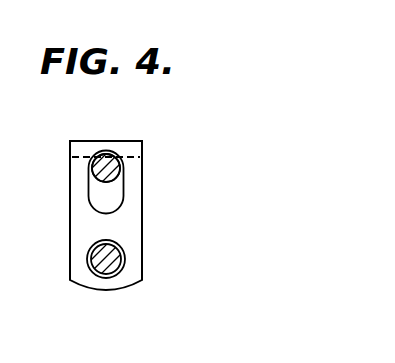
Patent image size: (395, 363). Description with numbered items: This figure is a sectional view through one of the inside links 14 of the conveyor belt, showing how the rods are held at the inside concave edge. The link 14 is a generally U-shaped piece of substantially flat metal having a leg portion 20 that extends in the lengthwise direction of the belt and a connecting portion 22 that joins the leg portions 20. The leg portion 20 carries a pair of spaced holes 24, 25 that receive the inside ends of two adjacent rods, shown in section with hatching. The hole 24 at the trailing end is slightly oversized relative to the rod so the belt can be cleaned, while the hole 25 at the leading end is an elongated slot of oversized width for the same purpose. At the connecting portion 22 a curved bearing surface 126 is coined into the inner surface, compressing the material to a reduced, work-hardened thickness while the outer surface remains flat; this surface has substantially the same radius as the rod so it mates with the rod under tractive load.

The inside link 14 is at (157, 163).
The leg portion 20 is at (80, 222).
The connecting portion 22 is at (70, 144).
The hole 24 is at (119, 245).
The hole 25 is at (123, 192).
The curved bearing surface 126 is at (104, 156).